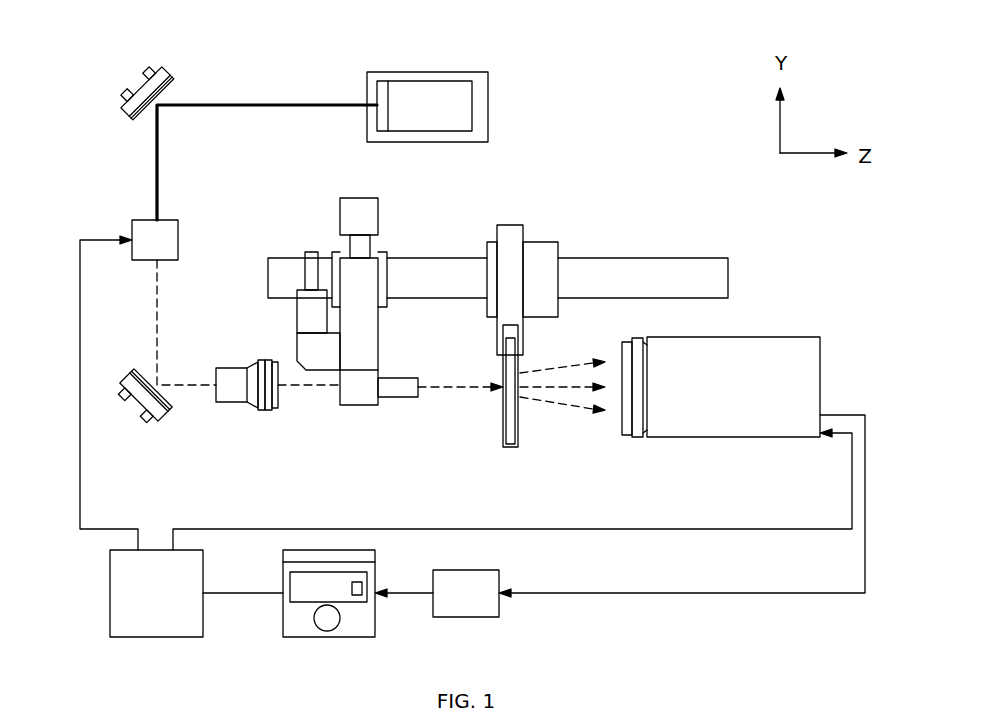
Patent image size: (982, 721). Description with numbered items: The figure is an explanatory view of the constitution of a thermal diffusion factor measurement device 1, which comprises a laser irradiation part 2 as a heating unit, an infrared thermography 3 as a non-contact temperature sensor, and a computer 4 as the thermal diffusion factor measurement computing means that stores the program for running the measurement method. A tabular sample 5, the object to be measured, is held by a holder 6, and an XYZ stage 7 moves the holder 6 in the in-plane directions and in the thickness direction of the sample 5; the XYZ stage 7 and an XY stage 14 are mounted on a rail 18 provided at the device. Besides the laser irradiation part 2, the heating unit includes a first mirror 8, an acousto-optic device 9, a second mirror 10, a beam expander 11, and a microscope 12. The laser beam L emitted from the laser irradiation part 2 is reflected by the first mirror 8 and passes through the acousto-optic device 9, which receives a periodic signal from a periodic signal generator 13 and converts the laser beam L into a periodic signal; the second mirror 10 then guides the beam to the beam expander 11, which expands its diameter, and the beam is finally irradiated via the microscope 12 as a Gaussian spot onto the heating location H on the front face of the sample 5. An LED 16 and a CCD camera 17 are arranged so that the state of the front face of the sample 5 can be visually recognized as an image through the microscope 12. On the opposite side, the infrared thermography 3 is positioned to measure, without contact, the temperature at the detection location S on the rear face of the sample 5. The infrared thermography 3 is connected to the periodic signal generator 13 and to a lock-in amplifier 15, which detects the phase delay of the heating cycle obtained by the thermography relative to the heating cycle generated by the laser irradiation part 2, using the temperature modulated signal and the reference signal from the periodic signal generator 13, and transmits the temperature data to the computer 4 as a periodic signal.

The thermal diffusion factor measurement device 1 is at (623, 57).
The laser irradiation part 2 is at (481, 72).
The infrared thermography 3 is at (808, 337).
The computer 4 is at (283, 620).
The sample 5 is at (518, 442).
The holder 6 is at (506, 225).
The XYZ stage 7 is at (553, 242).
The first mirror 8 is at (178, 82).
The acousto-optic device 9 is at (135, 222).
The second mirror 10 is at (175, 408).
The beam expander 11 is at (268, 410).
The microscope 12 is at (418, 394).
The periodic signal generator 13 is at (110, 595).
The XY stage 14 is at (380, 252).
The lock-in amplifier 15 is at (499, 607).
The LED 16 is at (310, 252).
The CCD camera 17 is at (363, 198).
The rail 18 is at (716, 258).
The laser beam L is at (458, 384).
The heating location H is at (503, 390).
The detection location S is at (522, 398).